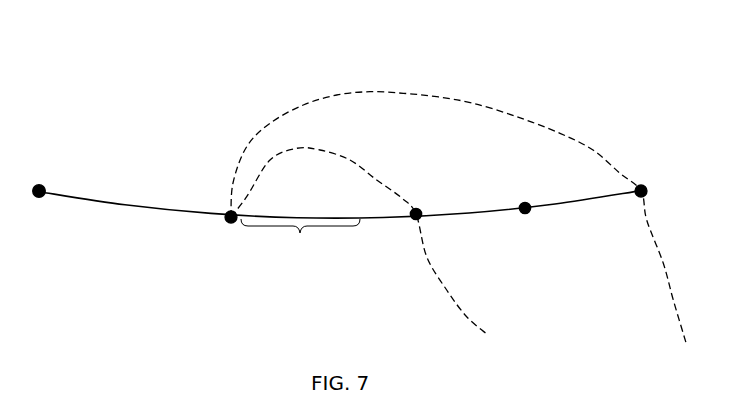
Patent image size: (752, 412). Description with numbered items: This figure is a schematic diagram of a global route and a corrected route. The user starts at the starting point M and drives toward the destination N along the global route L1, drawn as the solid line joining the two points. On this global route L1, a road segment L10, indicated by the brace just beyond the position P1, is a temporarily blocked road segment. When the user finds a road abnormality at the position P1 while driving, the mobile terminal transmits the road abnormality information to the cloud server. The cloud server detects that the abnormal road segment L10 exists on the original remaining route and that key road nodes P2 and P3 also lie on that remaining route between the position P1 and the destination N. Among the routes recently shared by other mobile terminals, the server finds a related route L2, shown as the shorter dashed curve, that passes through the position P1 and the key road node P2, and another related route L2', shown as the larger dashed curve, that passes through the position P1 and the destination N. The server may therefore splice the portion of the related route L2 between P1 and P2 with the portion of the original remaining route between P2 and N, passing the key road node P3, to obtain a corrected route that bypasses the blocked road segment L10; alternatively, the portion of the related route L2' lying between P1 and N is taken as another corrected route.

The starting point M is at (32, 204).
The destination N is at (641, 180).
The position of road abnormality P1 is at (224, 234).
The key road node P2 is at (418, 204).
The key road node P3 is at (519, 199).
The global route L1 is at (95, 208).
The related route L2 is at (359, 229).
The related route L2' is at (459, 194).
The road segment L10 is at (300, 246).